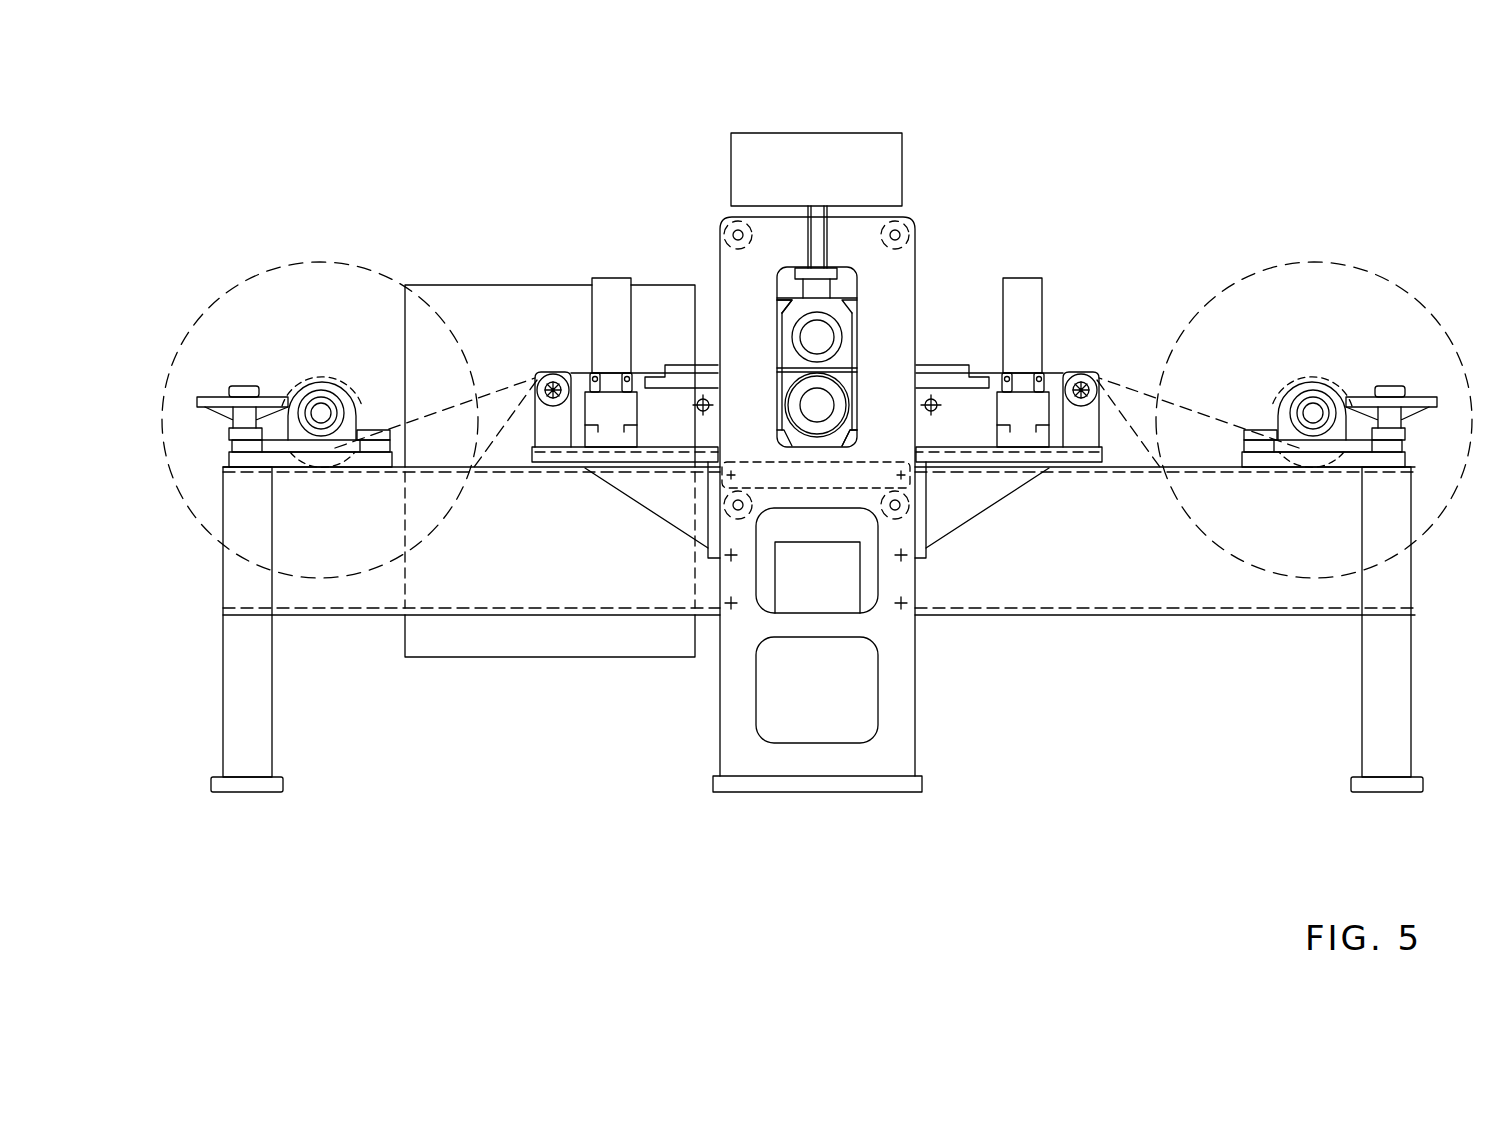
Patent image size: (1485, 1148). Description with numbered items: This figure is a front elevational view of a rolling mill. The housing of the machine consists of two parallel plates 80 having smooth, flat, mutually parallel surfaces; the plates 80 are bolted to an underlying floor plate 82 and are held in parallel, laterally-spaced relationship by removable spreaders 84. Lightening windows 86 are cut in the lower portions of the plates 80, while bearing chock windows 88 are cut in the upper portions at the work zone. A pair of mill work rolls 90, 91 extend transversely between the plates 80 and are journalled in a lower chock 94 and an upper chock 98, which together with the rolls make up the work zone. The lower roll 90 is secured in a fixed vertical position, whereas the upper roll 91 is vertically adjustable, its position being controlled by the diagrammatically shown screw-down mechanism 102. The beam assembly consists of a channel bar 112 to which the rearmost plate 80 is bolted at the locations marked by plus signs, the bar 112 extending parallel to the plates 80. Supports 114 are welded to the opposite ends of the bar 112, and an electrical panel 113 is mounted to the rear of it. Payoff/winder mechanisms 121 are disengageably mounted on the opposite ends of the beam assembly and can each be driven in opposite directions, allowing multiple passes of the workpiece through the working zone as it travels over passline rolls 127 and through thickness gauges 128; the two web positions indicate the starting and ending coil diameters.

The housing plates 80 is at (718, 748).
The floor plate 82 is at (843, 793).
The removable spreaders 84 is at (722, 241).
The lightening windows 86 is at (862, 605).
The bearing chock windows 88 is at (849, 362).
The lower mill work roll 90 is at (822, 410).
The upper mill work roll 91 is at (820, 337).
The forward lower chock 94 is at (848, 437).
The forward upper chock 98 is at (790, 305).
The screw-down mechanism 102 is at (868, 133).
The channel bar 112 is at (1110, 598).
The electrical panel 113 is at (468, 660).
The supports 114 is at (262, 700).
The payoff/winder mechanisms 121 is at (326, 380).
The passline rolls 127 is at (547, 408).
The thickness gauges 128 is at (608, 278).